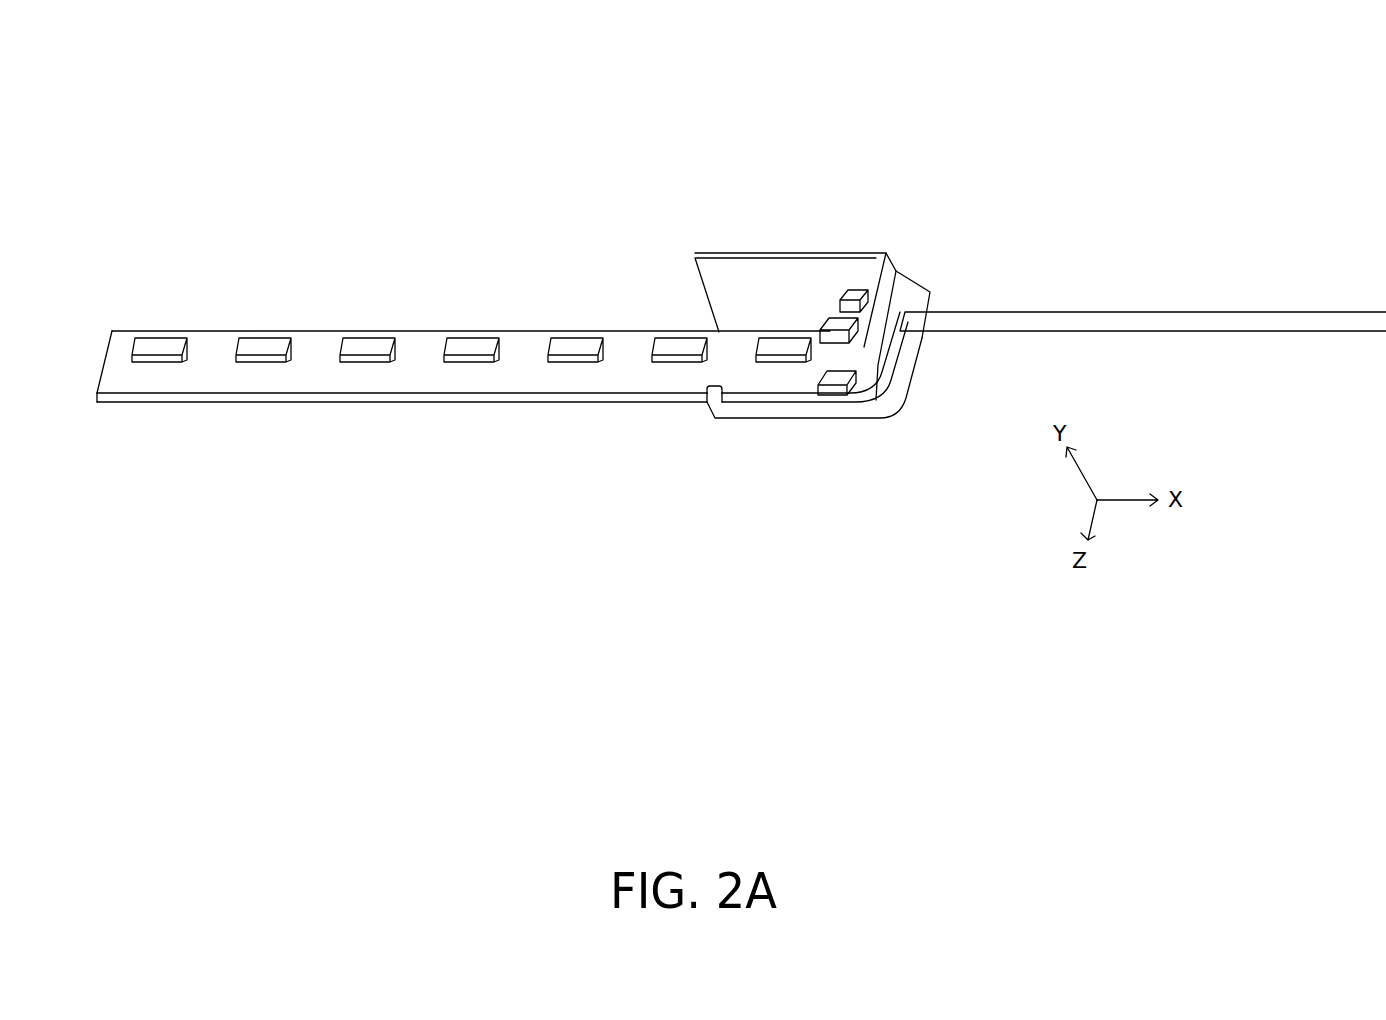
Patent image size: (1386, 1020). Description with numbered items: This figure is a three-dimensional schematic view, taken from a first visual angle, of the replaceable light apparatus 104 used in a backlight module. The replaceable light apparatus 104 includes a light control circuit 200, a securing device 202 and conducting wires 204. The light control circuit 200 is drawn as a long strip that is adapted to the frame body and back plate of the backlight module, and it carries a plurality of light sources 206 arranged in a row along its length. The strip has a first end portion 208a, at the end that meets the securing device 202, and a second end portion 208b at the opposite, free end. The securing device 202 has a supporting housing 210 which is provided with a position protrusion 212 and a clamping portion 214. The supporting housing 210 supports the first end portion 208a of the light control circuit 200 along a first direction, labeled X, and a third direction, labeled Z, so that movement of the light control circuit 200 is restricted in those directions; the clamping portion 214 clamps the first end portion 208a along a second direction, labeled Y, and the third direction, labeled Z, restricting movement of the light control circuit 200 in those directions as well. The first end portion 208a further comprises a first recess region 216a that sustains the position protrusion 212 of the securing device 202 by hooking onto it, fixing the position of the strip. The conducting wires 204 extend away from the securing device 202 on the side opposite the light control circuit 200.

The replaceable light apparatus 104 is at (1337, 60).
The light control circuit 200 is at (428, 331).
The securing device 202 is at (797, 252).
The conducting wires 204 is at (1125, 311).
The light sources 206 is at (472, 347).
The first end portion 208a is at (785, 376).
The second end portion 208b is at (103, 355).
The supporting housing 210 is at (817, 410).
The position protrusion 212 is at (715, 393).
The clamping portion 214 is at (838, 327).
The first recess region 216a is at (718, 388).